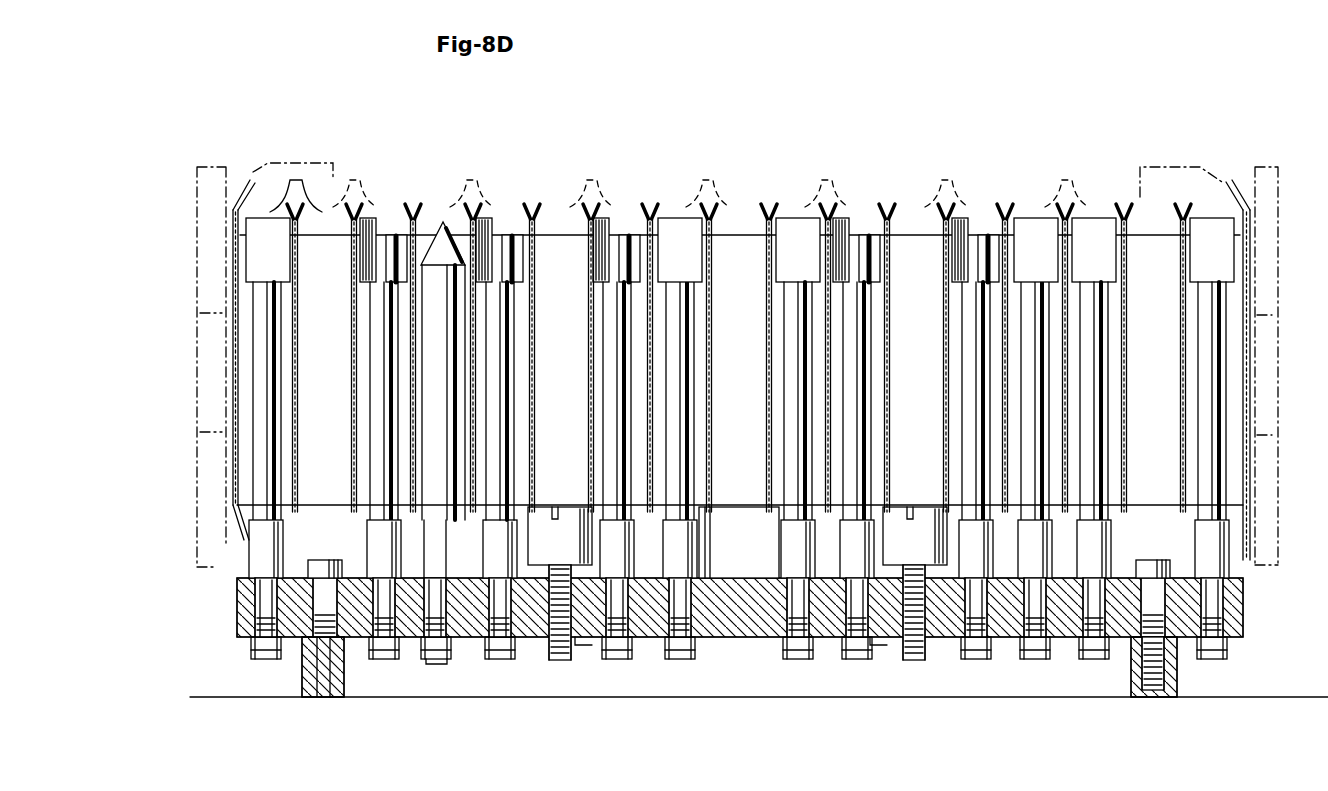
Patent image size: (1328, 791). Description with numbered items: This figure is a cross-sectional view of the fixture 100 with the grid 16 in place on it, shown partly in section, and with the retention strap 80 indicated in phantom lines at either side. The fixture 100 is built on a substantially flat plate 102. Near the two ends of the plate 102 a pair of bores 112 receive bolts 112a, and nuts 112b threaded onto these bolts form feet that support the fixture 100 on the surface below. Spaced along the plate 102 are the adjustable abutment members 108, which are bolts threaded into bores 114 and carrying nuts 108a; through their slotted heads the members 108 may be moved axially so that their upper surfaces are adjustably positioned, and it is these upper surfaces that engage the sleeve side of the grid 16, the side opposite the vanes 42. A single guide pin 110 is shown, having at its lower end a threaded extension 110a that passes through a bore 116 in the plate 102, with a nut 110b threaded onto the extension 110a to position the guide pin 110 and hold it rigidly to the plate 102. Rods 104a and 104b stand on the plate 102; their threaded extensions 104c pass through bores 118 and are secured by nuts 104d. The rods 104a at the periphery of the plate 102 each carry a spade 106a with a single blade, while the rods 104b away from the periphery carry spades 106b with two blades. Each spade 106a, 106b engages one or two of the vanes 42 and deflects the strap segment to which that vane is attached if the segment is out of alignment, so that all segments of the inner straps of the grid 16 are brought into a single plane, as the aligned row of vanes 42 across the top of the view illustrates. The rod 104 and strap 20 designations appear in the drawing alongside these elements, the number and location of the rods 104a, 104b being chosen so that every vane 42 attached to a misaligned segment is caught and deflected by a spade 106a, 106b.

The retention strap 80 is at (205, 165).
The spade 106a is at (262, 225).
The vanes 42 is at (415, 212).
The guide pin 110 is at (442, 228).
The spades 106b is at (510, 225).
The grid 16 is at (1016, 164).
The rods 104a is at (256, 405).
The rods 104b is at (500, 378).
The wire 20 is at (528, 410).
The adjustable abutment members 108 is at (545, 502).
The right side wall 104 is at (1218, 372).
The bolts 112a is at (324, 562).
The bores 112 is at (318, 598).
The threaded extensions 104c is at (258, 607).
The nuts 104d is at (268, 655).
The nuts 112b is at (320, 690).
The bores 118 is at (382, 622).
The bore 116 is at (443, 618).
The threaded extension 110a is at (440, 662).
The nut 110b is at (428, 648).
The bores 114 is at (556, 614).
The nuts 108a is at (583, 642).
The plate 102 is at (748, 634).
The fixture 100 is at (1268, 639).